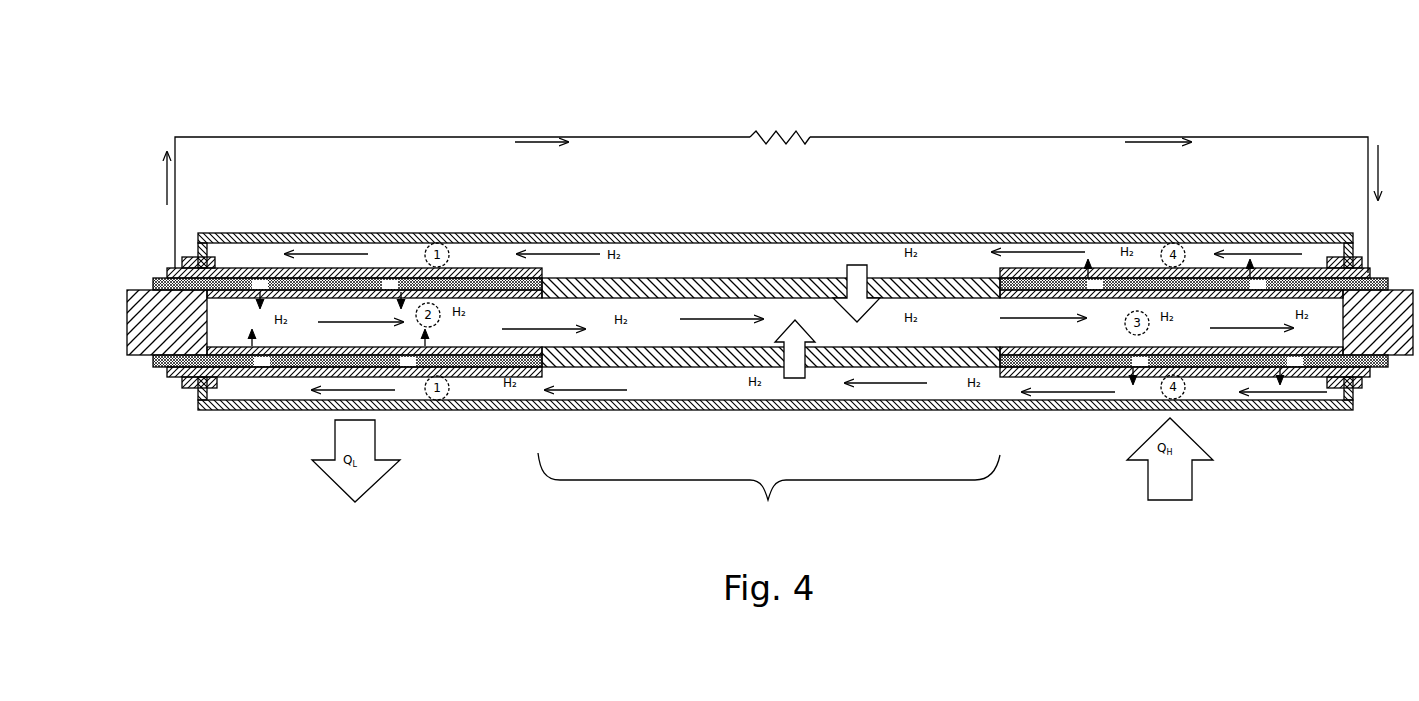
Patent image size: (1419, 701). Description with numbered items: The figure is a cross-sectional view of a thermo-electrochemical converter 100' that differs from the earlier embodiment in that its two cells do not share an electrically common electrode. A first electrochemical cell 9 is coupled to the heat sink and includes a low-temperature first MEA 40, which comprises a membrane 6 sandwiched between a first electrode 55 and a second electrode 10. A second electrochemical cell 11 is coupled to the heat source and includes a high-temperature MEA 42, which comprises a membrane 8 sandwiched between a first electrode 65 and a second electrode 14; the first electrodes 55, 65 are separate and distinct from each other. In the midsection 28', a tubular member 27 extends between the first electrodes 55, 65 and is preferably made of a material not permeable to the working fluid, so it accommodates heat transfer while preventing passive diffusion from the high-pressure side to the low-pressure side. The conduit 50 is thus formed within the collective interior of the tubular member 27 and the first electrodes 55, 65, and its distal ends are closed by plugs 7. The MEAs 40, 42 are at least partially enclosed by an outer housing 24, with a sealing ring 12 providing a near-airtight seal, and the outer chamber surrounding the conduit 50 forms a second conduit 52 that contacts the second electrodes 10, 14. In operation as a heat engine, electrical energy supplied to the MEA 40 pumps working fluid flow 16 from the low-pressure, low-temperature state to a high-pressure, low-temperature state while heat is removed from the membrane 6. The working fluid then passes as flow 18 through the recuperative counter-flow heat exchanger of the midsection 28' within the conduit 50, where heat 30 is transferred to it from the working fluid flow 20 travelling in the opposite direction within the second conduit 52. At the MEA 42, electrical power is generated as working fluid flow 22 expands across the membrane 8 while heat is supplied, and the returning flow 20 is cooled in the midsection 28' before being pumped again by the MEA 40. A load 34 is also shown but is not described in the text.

The converter 100' is at (1289, 75).
The electrical load 34 is at (800, 137).
The outer housing 24 is at (962, 232).
The tubular member 27 is at (793, 232).
The second electrode 14 is at (1373, 273).
The plugs 7 is at (125, 318).
The sealing ring 12 is at (183, 255).
The second conduit 52 is at (237, 260).
The first MEA 40 is at (267, 277).
The first MEA 42 is at (1145, 267).
The first electrochemical cell 9 is at (402, 255).
The second electrochemical cell 11 is at (1089, 247).
The working fluid flow 18 is at (542, 330).
The working fluid flow 20 is at (875, 378).
The heat 30 is at (887, 232).
The midsection 28' is at (769, 491).
The first electrode 55 is at (150, 282).
The first electrode 65 is at (1405, 278).
The membrane 6 is at (153, 367).
The second electrode 10 is at (170, 377).
The membrane 8 is at (1380, 360).
The working fluid flow 16 is at (250, 337).
The conduit 50 is at (302, 330).
The working fluid flow 22 is at (1285, 365).